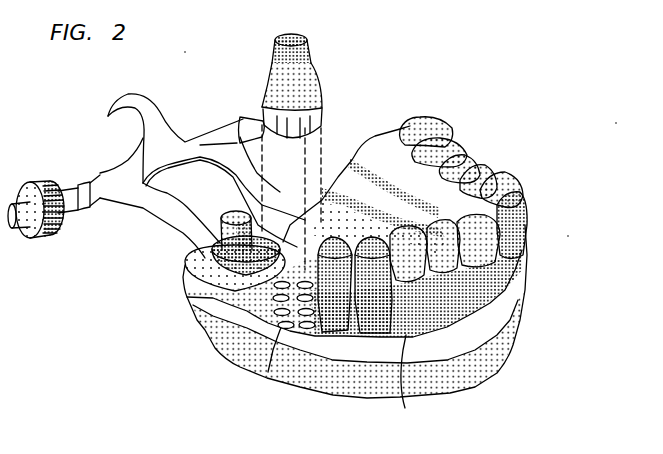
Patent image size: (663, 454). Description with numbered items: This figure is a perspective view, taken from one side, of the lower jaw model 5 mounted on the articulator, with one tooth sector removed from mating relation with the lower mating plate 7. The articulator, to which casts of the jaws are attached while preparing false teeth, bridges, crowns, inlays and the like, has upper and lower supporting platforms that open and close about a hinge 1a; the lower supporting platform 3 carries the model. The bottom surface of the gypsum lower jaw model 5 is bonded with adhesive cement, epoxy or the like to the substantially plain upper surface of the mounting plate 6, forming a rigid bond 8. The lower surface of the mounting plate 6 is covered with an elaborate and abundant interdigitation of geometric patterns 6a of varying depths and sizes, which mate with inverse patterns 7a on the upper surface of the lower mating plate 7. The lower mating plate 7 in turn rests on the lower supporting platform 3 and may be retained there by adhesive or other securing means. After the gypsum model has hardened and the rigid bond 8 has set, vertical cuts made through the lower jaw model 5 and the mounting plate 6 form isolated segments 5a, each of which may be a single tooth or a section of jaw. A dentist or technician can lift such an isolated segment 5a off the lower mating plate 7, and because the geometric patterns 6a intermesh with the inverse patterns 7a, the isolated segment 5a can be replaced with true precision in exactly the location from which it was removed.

The hinge 1a is at (42, 238).
The lower supporting platform 3 is at (438, 370).
The lower jaw model 5 is at (403, 122).
The isolated segment 5a is at (318, 72).
The mounting plate 6 is at (497, 312).
The geometric patterns 6a is at (316, 130).
The lower mating plate 7 is at (472, 337).
The inverse patterns 7a is at (268, 372).
The rigid bond 8 is at (410, 379).